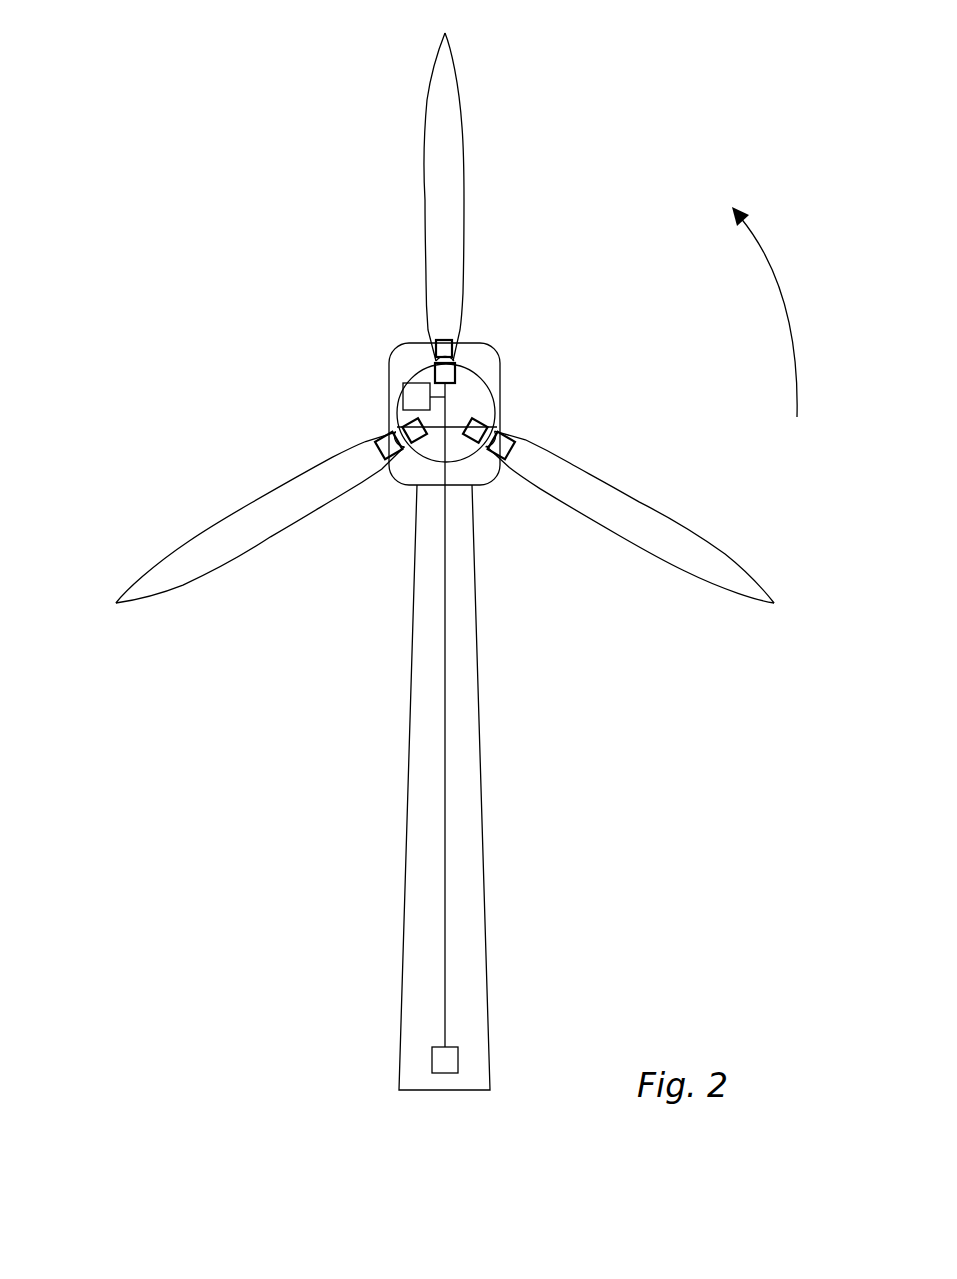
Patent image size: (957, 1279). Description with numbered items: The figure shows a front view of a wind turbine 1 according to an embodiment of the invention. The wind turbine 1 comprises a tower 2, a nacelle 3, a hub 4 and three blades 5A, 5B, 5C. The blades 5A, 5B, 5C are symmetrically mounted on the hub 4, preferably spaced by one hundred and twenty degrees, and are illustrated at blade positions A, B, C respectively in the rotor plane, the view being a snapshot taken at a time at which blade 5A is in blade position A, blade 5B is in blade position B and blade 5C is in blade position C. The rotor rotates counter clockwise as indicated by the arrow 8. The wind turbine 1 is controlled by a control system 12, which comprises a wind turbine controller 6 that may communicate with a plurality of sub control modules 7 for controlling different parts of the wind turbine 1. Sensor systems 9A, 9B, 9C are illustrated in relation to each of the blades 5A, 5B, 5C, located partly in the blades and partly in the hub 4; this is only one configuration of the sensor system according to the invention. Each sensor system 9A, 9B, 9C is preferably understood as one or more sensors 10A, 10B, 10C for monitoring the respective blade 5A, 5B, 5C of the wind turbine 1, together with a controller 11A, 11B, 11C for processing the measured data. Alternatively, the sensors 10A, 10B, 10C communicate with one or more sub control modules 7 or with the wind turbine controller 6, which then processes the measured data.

The wind turbine 1 is at (170, 131).
The tower 2 is at (418, 953).
The nacelle 3 is at (402, 360).
The hub 4 is at (473, 368).
The blade 5A is at (447, 127).
The blade 5B is at (708, 552).
The blade 5C is at (183, 567).
The wind turbine controller 6 is at (447, 1060).
The sub control module 7 is at (415, 397).
The arrow 8 is at (783, 300).
The sensor system 9A is at (457, 361).
The sensor system 9B is at (504, 455).
The sensor system 9C is at (385, 455).
The sensor 10A is at (433, 365).
The sensor 10B is at (507, 430).
The sensor 10C is at (382, 432).
The controller 11A is at (450, 341).
The controller 11B is at (482, 420).
The controller 11C is at (400, 420).
The control system 12 is at (468, 842).
The blade position A is at (445, 33).
The blade position B is at (772, 602).
The blade position C is at (120, 600).